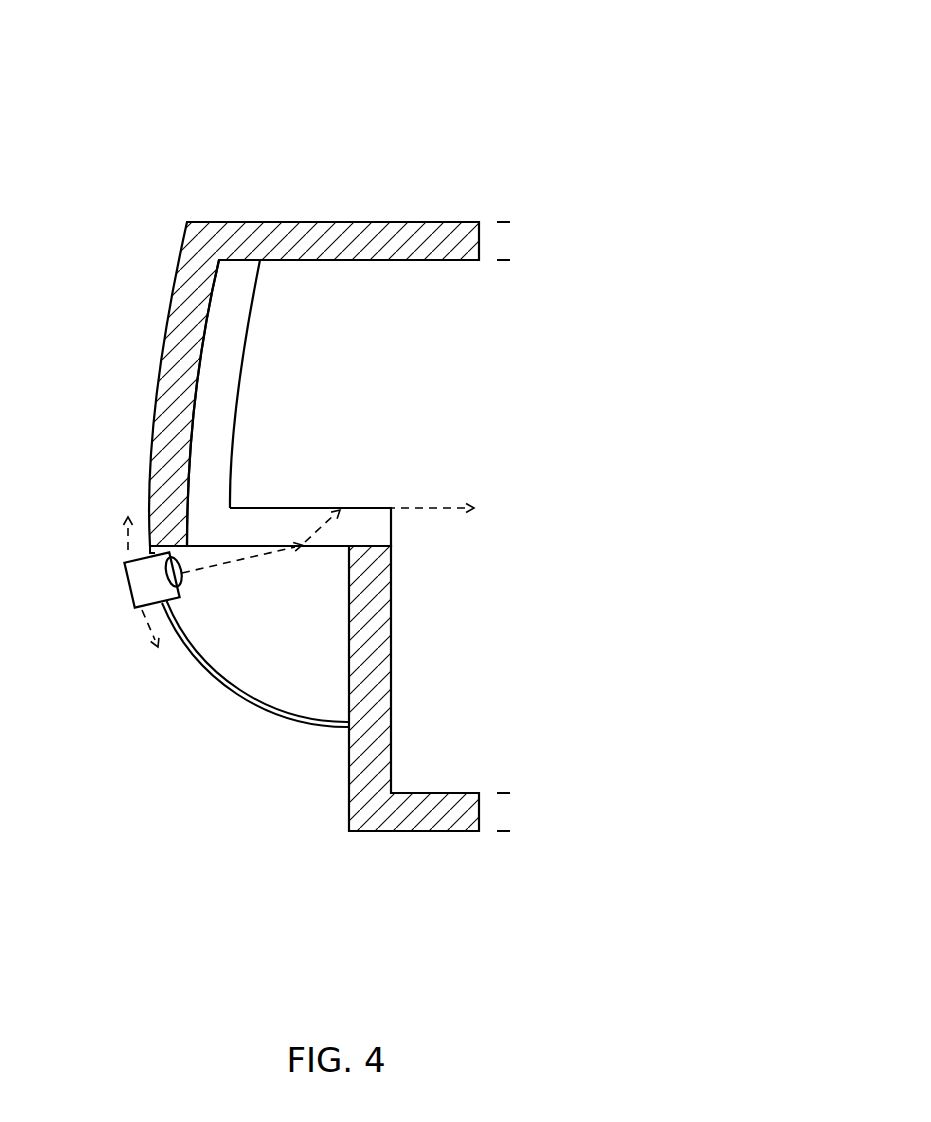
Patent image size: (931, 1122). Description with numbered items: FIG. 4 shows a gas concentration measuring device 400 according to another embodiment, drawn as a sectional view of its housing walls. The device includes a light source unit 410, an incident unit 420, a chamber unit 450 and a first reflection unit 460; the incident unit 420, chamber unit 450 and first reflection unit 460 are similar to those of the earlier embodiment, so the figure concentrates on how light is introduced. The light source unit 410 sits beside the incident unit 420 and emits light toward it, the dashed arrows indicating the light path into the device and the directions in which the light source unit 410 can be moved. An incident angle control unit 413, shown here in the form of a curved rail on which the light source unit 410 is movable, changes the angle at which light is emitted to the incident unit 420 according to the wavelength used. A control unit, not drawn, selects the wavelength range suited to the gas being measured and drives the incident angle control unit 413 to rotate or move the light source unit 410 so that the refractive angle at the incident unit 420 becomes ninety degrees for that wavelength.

The gas concentration measuring device 400 is at (507, 32).
The light source unit 410 is at (132, 588).
The incident angle control unit 413 is at (323, 723).
The incident unit 420 is at (267, 523).
The chamber unit 450 is at (192, 275).
The first reflection unit 460 is at (230, 298).